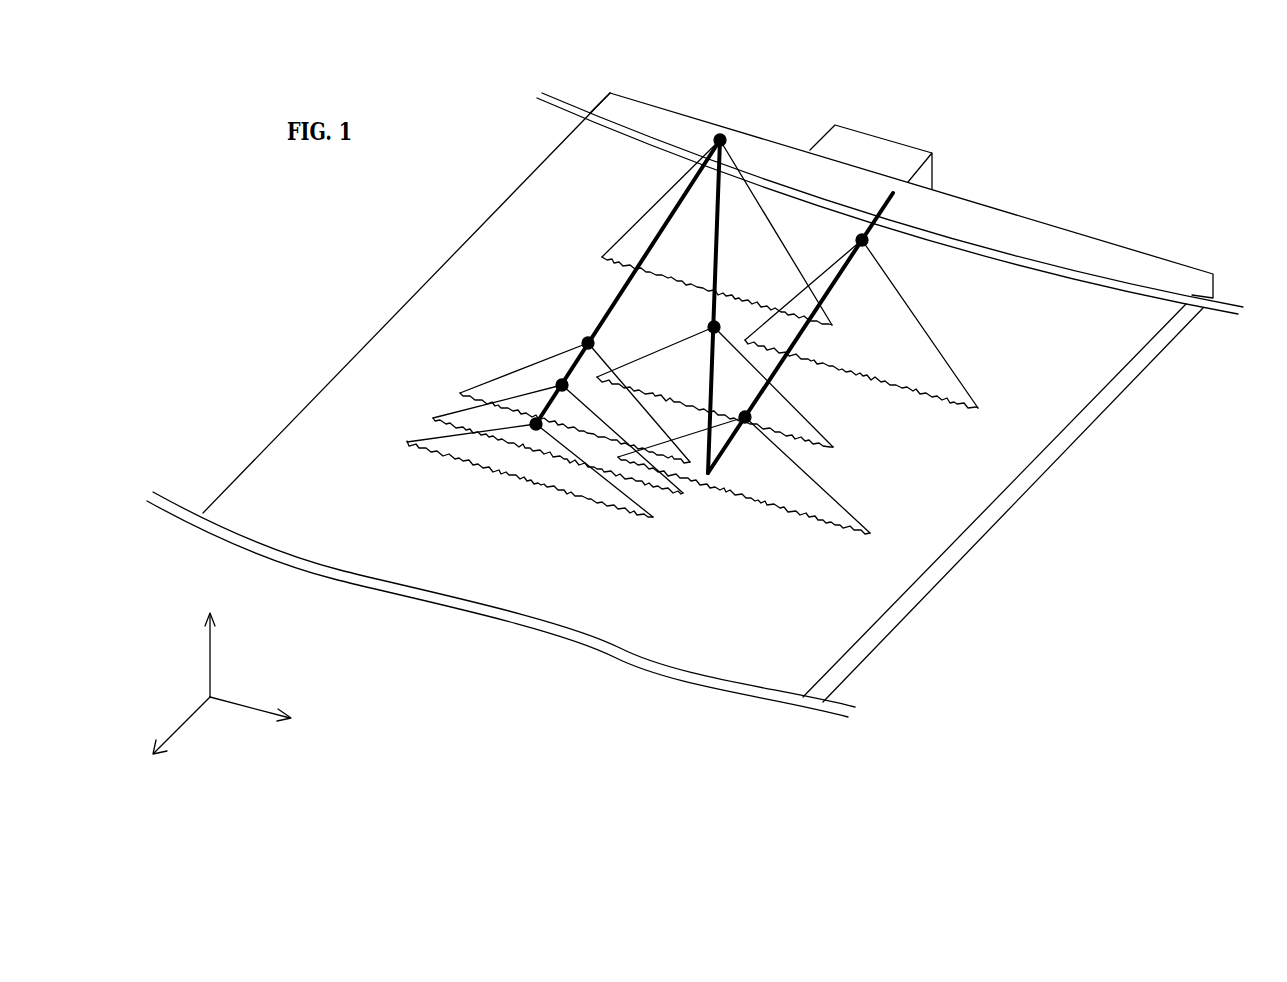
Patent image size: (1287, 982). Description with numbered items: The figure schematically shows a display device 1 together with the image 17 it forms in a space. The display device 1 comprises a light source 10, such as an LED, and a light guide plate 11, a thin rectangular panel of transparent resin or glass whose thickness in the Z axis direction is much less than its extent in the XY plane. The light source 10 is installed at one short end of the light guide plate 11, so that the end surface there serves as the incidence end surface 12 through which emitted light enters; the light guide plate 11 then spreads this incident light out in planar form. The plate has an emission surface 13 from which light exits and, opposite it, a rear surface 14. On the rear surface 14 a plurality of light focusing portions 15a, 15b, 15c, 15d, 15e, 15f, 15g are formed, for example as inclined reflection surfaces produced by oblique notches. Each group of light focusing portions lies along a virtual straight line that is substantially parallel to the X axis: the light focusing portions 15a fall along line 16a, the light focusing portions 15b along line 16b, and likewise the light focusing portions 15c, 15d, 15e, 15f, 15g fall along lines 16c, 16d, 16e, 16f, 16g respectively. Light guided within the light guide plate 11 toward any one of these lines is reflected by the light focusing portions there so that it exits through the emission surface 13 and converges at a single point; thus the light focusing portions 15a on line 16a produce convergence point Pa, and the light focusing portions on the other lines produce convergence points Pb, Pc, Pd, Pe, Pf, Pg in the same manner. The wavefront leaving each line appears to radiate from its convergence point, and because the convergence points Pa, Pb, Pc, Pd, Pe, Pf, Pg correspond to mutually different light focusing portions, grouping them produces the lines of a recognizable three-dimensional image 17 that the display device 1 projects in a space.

The display device 1 is at (1231, 131).
The light source 10 is at (898, 157).
The light guide plate 11 is at (1133, 337).
The incidence end surface 12 is at (947, 188).
The emission surface 13 is at (1042, 430).
The rear surface 14 is at (930, 540).
The light focusing portions 15a is at (618, 267).
The light focusing portions 15b is at (972, 410).
The light focusing portions 15c is at (808, 450).
The light focusing portions 15d is at (472, 393).
The light focusing portions 15e is at (805, 517).
The light focusing portions 15f is at (435, 420).
The light focusing portions 15g is at (478, 467).
The line 16a is at (600, 257).
The line 16b is at (985, 410).
The line 16c is at (833, 447).
The line 16d is at (465, 390).
The line 16e is at (868, 533).
The line 16f is at (683, 493).
The line 16g is at (658, 520).
The image 17 is at (725, 192).
The convergence point Pa is at (721, 136).
The convergence point Pb is at (865, 240).
The convergence point Pc is at (714, 327).
The convergence point Pd is at (588, 343).
The convergence point Pe is at (745, 420).
The convergence point Pf is at (560, 382).
The convergence point Pg is at (536, 426).